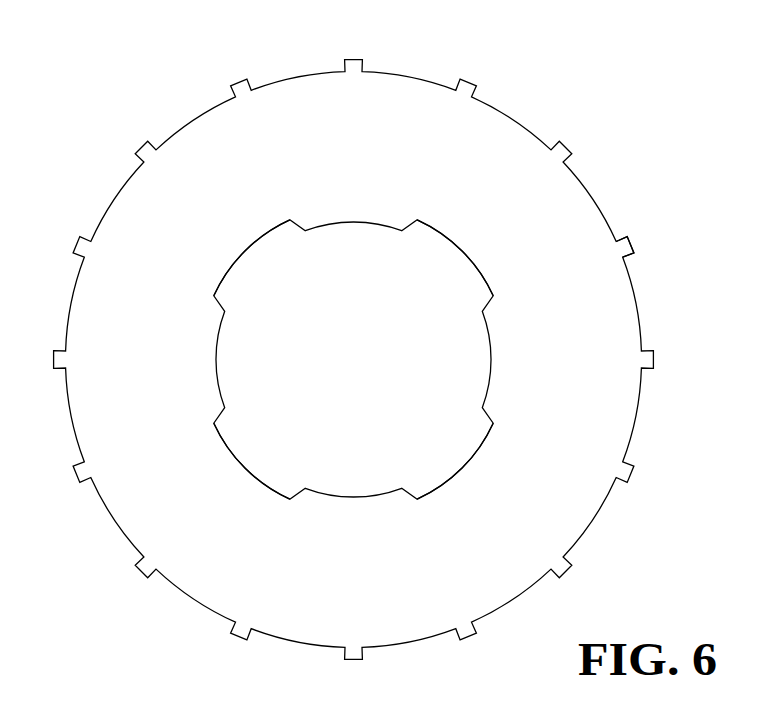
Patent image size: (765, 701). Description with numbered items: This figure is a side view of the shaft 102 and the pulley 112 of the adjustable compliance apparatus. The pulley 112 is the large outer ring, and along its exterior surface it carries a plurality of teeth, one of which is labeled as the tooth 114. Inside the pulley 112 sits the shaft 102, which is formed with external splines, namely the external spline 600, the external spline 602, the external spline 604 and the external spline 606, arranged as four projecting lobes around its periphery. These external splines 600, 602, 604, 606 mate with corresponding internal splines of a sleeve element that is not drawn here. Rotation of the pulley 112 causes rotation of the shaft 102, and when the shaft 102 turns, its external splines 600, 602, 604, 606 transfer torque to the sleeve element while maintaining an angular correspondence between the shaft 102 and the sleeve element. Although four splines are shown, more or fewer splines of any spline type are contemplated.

The shaft 102 is at (217, 362).
The pulley 112 is at (517, 120).
The tooth 114 is at (628, 240).
The external spline 600 is at (243, 252).
The external spline 602 is at (460, 248).
The external spline 604 is at (468, 462).
The external spline 606 is at (240, 463).